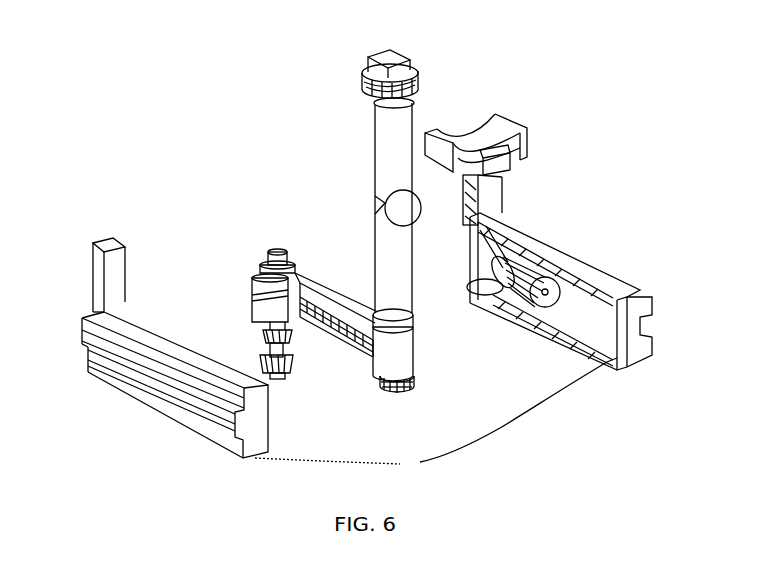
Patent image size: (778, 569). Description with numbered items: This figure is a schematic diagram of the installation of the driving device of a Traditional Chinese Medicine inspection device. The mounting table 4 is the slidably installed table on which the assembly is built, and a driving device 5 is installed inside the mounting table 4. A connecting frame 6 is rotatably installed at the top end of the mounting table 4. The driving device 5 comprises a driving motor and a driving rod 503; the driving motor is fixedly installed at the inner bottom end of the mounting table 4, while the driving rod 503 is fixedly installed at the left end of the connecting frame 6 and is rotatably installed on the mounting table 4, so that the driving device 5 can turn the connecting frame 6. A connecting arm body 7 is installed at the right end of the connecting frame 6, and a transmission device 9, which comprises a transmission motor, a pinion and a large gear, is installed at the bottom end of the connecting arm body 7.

The mounting table 4 is at (349, 356).
The driving device 5 is at (530, 262).
The connecting frame 6 is at (347, 340).
The connecting arm body 7 is at (430, 360).
The transmission device 9 is at (373, 152).
The driving rod 503 is at (250, 305).